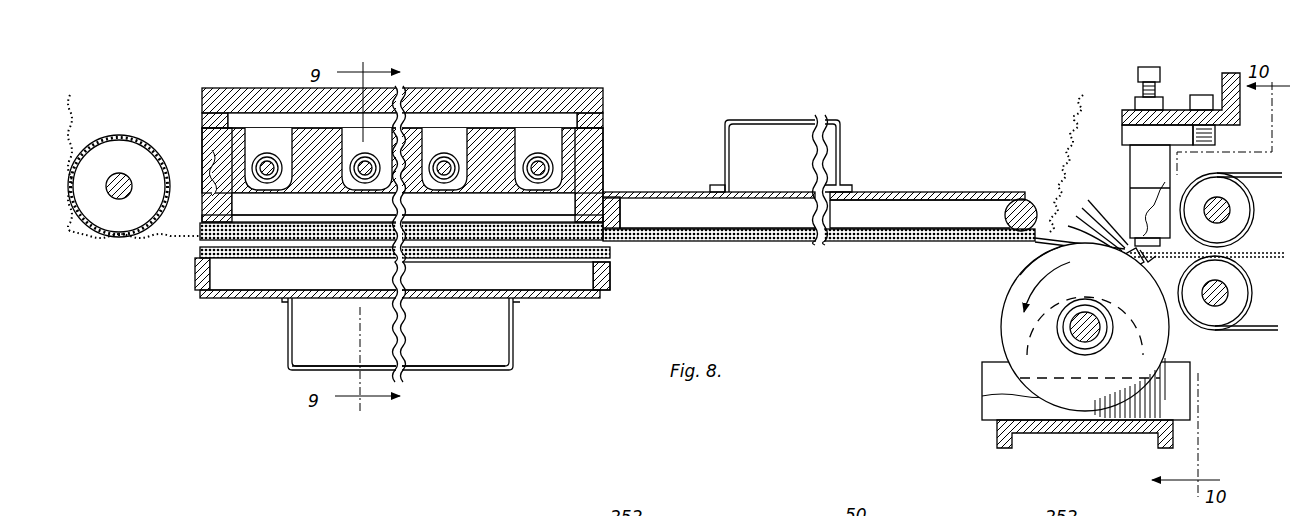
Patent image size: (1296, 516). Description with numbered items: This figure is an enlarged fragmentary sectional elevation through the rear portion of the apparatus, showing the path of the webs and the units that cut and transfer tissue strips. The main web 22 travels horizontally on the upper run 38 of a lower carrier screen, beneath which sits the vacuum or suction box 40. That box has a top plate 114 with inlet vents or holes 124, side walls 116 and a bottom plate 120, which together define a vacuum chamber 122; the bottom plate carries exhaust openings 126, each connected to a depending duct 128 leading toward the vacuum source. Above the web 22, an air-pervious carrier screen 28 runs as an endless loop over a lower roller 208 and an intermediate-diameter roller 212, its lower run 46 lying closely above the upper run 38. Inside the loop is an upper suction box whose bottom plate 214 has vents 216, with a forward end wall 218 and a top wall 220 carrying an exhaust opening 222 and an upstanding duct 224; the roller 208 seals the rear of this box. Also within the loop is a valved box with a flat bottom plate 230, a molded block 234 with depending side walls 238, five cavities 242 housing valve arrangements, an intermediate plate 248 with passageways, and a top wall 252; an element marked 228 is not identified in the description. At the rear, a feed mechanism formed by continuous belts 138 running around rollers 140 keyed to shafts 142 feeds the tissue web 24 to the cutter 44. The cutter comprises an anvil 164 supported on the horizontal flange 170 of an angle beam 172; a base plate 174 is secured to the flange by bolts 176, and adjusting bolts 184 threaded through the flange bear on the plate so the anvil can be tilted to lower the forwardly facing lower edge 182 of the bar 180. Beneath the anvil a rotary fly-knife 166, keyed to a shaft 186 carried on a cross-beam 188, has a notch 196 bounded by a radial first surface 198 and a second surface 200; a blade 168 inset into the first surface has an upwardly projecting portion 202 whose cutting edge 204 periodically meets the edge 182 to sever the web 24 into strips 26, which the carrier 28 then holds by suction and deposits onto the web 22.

The carrier screen 28 is at (72, 98).
The roller 212 is at (140, 136).
The side walls 238 is at (203, 160).
The top wall 252 is at (404, 92).
The intermediate plate 248 is at (600, 92).
The molded block 234 is at (413, 144).
The cavities 242 is at (403, 159).
The pressure plate 228 is at (400, 215).
The flat bottom plate 230 is at (440, 220).
The strips 26 is at (200, 232).
The web 22 is at (608, 250).
The upper run 38 is at (612, 270).
The side walls 116 is at (195, 275).
The vacuum box 40 is at (404, 327).
The top plate 114 is at (338, 270).
The inlet vents 124 is at (480, 260).
The exhaust openings 126 is at (298, 300).
The vacuum chamber 122 is at (482, 290).
The duct 128 is at (394, 372).
The bottom plate 120 is at (565, 298).
The forward end wall 218 is at (622, 212).
The vents 216 is at (709, 235).
The lower run 46 is at (768, 218).
The exhaust opening 222 is at (730, 190).
The upstanding duct 224 is at (836, 118).
The top wall 220 is at (890, 192).
The bottom plate 214 is at (933, 191).
The lower roller 208 is at (1032, 200).
The adjusting bolts 184 is at (1138, 74).
The flange 170 is at (1135, 103).
The bolts 176 is at (1206, 95).
The base plate 174 is at (1130, 136).
The angle beam 172 is at (1232, 126).
The anvil 164 is at (1152, 168).
The bar 180 is at (1150, 195).
The lower edge 182 is at (1096, 183).
The cutting edge 204 is at (1096, 198).
The upwardly projecting portion 202 is at (1094, 214).
The notch 196 is at (1082, 228).
The blade 168 is at (1140, 262).
The continuous belts 138 is at (1231, 270).
The rollers 140 is at (1224, 164).
The shafts 142 is at (1228, 218).
The web 24 is at (1254, 258).
The second surface 200 is at (1040, 259).
The first surface 198 is at (1047, 330).
The cutter 44 is at (1042, 354).
The shaft 186 is at (1070, 342).
The rotary fly-knife 166 is at (982, 410).
The cross-beam 188 is at (1040, 434).